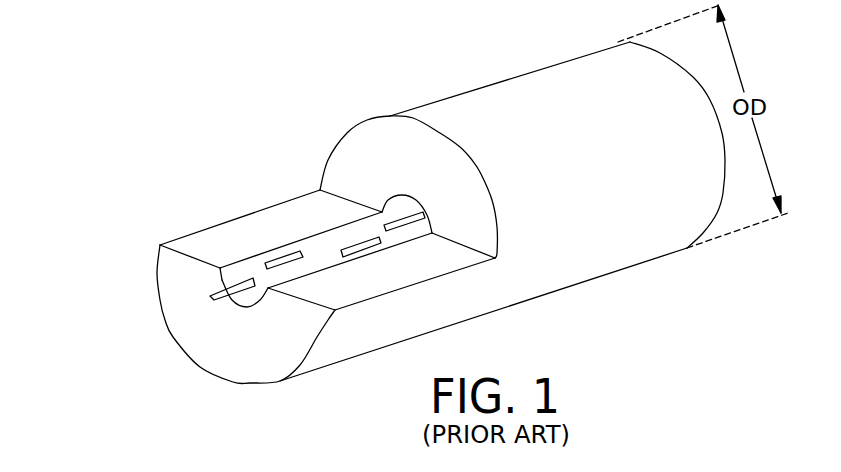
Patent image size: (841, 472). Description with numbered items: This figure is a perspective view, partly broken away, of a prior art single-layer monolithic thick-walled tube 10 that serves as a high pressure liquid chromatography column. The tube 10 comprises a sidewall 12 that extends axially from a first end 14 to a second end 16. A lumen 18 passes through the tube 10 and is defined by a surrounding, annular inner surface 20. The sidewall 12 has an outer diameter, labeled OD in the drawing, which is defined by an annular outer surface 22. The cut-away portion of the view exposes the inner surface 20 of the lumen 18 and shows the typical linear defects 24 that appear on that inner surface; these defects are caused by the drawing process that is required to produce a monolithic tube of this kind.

The monolithic thick-walled tube 10 is at (322, 100).
The sidewall 12 is at (515, 108).
The first end 14 is at (723, 195).
The second end 16 is at (177, 288).
The lumen 18 is at (410, 201).
The inner surface 20 is at (311, 264).
The outer surface 22 is at (625, 228).
The linear defects 24 is at (275, 258).